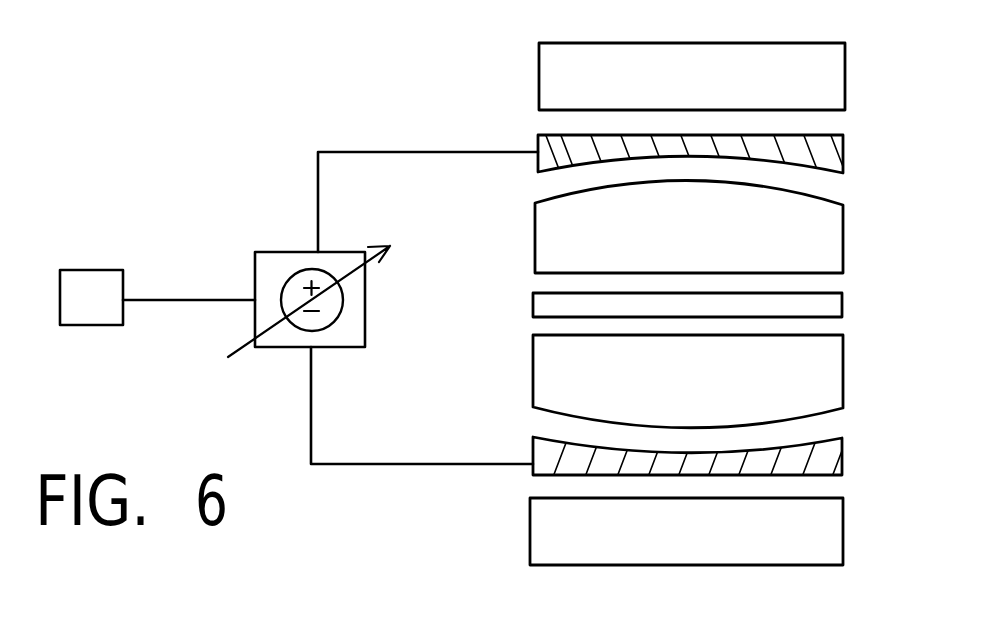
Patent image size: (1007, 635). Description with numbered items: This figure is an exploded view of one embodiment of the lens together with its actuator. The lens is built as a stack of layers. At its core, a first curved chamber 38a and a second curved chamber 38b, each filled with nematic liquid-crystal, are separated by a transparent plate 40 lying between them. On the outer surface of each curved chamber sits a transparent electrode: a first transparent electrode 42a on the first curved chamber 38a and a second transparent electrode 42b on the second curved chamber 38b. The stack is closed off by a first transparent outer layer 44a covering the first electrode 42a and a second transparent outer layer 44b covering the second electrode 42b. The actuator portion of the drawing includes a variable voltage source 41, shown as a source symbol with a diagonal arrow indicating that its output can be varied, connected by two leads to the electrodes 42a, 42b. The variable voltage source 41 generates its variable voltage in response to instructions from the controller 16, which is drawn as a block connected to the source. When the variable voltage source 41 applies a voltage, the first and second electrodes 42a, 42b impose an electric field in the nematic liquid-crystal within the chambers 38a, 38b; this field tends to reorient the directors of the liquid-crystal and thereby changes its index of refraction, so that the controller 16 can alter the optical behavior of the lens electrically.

The controller 16 is at (78, 311).
The variable voltage source 41 is at (368, 307).
The first transparent outer layer 44a is at (845, 82).
The first transparent electrode 42a is at (843, 150).
The first curved chamber 38a is at (843, 247).
The transparent plate 40 is at (842, 305).
The second curved chamber 38b is at (843, 378).
The second transparent electrode 42b is at (842, 463).
The second transparent outer layer 44b is at (843, 537).